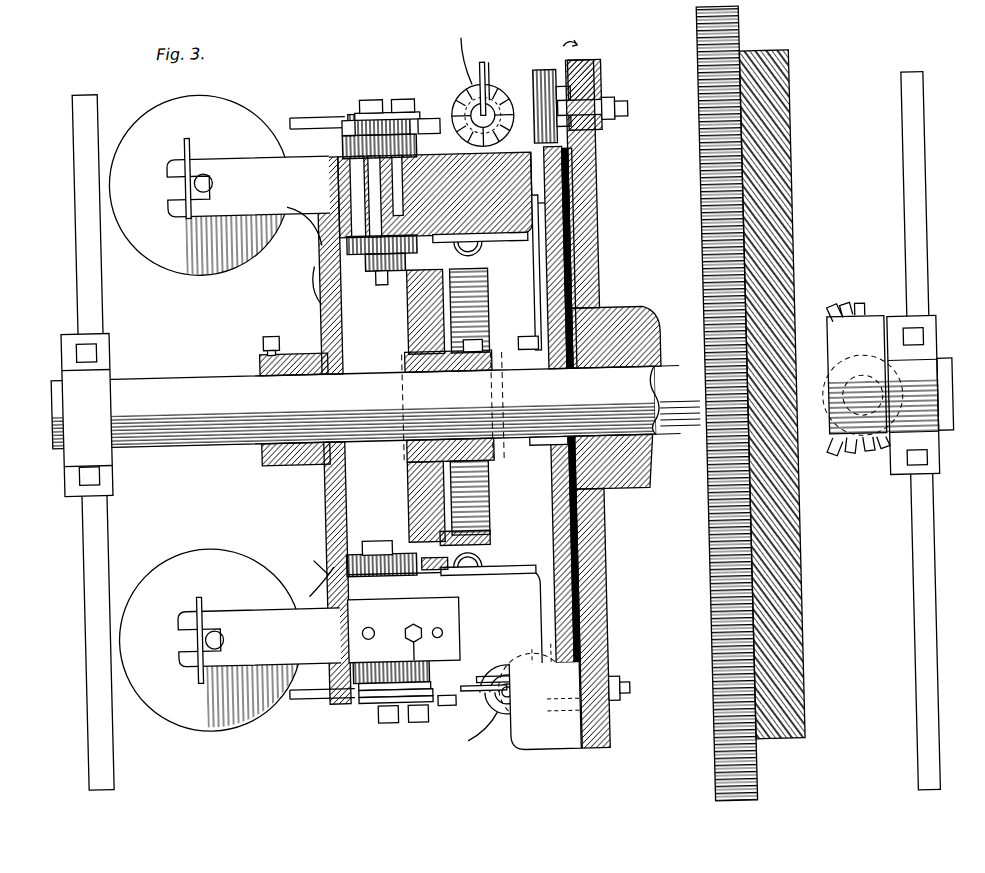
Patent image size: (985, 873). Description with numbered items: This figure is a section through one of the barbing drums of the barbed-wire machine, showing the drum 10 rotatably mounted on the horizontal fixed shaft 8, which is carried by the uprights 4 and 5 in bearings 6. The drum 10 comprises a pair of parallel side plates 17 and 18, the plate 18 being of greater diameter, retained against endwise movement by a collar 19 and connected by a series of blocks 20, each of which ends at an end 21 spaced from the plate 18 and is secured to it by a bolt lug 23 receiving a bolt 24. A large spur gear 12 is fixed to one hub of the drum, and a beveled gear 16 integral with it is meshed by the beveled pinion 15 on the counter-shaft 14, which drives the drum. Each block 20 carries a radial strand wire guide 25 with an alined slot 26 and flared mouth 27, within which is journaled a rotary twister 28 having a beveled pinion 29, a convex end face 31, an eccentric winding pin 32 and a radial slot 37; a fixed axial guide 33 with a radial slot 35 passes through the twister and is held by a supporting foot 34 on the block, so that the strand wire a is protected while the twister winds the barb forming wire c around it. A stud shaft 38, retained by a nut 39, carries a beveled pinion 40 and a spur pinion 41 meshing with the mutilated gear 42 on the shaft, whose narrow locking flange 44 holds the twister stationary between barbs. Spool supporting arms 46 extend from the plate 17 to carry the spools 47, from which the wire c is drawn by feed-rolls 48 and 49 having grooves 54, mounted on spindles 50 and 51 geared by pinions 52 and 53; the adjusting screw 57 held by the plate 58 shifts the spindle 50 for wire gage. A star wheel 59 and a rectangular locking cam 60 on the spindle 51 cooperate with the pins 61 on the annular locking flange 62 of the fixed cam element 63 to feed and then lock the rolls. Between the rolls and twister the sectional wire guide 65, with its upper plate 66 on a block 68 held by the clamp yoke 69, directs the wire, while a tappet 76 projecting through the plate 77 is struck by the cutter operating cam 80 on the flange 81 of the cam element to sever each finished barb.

The left upright bar 4 is at (80, 246).
The right upright bar 5 is at (931, 211).
The bearing block 6 is at (960, 348).
The fixed shaft 8 is at (198, 372).
The barbing drum 10 is at (262, 298).
The spur gear 12 is at (720, 196).
The counter-shaft 14 is at (953, 380).
The beveled pinion 15 is at (912, 230).
The beveled gear 16 is at (800, 568).
The side plate 17 is at (323, 306).
The side plate 18 is at (602, 251).
The collar 19 is at (280, 462).
The block 20 is at (536, 592).
The block end 21 is at (572, 604).
The bolt lug 23 is at (552, 752).
The bolt 24 is at (615, 703).
The strand wire guide 25 is at (490, 712).
The guide slot 26 is at (461, 391).
The flared mouth 27 is at (500, 700).
The rotary twister 28 is at (462, 104).
The beveled pinion 29 is at (530, 745).
The convex end face 31 is at (498, 676).
The barb winding pin 32 is at (532, 675).
The axial guide 33 is at (470, 692).
The supporting foot 34 is at (443, 253).
The radial slot 35 is at (600, 84).
The radial slot 37 is at (498, 705).
The stud shaft 38 is at (636, 116).
The nut 39 is at (622, 104).
The beveled pinion 40 is at (584, 44).
The spur pinion 41 is at (580, 140).
The mutilated gear 42 is at (574, 272).
The locking flange 44 is at (602, 650).
The spool supporting arm 46 is at (253, 409).
The barb forming wire spool 47 is at (204, 413).
The feed-roll 48 is at (372, 700).
The feed-roll 49 is at (360, 688).
The spindle 50 is at (411, 720).
The spindle 51 is at (386, 720).
The pinion 52 is at (439, 640).
The pinion 53 is at (347, 670).
The peripheral groove 54 is at (358, 695).
The adjusting screw 57 is at (423, 629).
The plate 58 is at (404, 630).
The star wheel 59 is at (303, 420).
The locking cam 60 is at (366, 540).
The pin 61 is at (439, 565).
The annular locking flange 62 is at (386, 282).
The fixed cam element 63 is at (406, 470).
The sectional wire guide 65 is at (423, 184).
The upper grooved plate 66 is at (384, 196).
The block 68 is at (450, 598).
The clamp yoke 69 is at (422, 770).
The tappet 76 is at (480, 556).
The plate 77 is at (500, 572).
The cutter operating cam 80 is at (488, 538).
The flange 81 is at (492, 282).
The strand wire a is at (478, 90).
The barb forming wire c is at (296, 690).